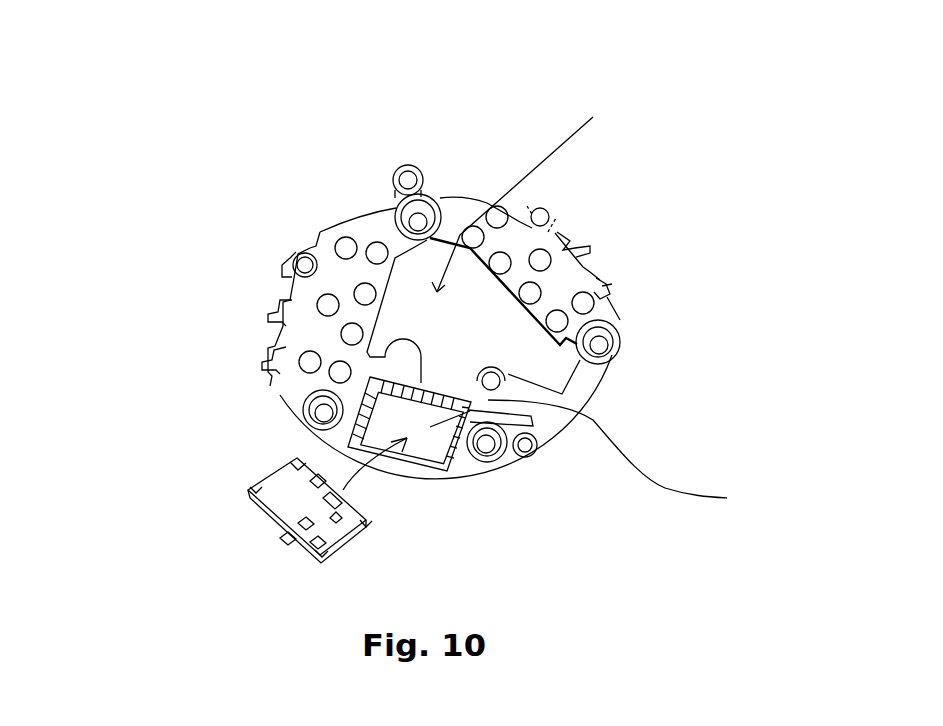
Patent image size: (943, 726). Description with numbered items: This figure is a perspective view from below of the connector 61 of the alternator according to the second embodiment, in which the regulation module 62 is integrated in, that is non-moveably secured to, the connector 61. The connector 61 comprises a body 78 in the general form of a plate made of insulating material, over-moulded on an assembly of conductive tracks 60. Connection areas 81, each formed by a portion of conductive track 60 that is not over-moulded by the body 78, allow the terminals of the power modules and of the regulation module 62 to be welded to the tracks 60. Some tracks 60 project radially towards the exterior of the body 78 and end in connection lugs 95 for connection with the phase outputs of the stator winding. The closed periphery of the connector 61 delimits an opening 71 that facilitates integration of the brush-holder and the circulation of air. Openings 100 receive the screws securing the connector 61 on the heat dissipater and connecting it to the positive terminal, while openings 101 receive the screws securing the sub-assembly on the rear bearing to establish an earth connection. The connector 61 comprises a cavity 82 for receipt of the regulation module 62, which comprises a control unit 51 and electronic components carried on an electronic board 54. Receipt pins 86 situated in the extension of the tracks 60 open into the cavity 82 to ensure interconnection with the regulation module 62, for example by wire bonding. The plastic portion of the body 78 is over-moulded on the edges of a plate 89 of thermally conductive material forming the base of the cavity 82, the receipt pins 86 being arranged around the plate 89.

The control unit 51 is at (277, 517).
The electronic board 54 is at (287, 487).
The conductive tracks 60 is at (605, 314).
The connector 61 is at (642, 343).
The regulation module 62 is at (260, 518).
The opening 71 is at (527, 192).
The body 78 is at (388, 222).
The connection areas 81 is at (376, 248).
The cavity 82 is at (422, 447).
The receipt pins 86 is at (457, 462).
The plate 89 is at (520, 434).
The connection lugs 95 is at (313, 249).
The openings 100 is at (305, 406).
The openings 101 is at (424, 174).